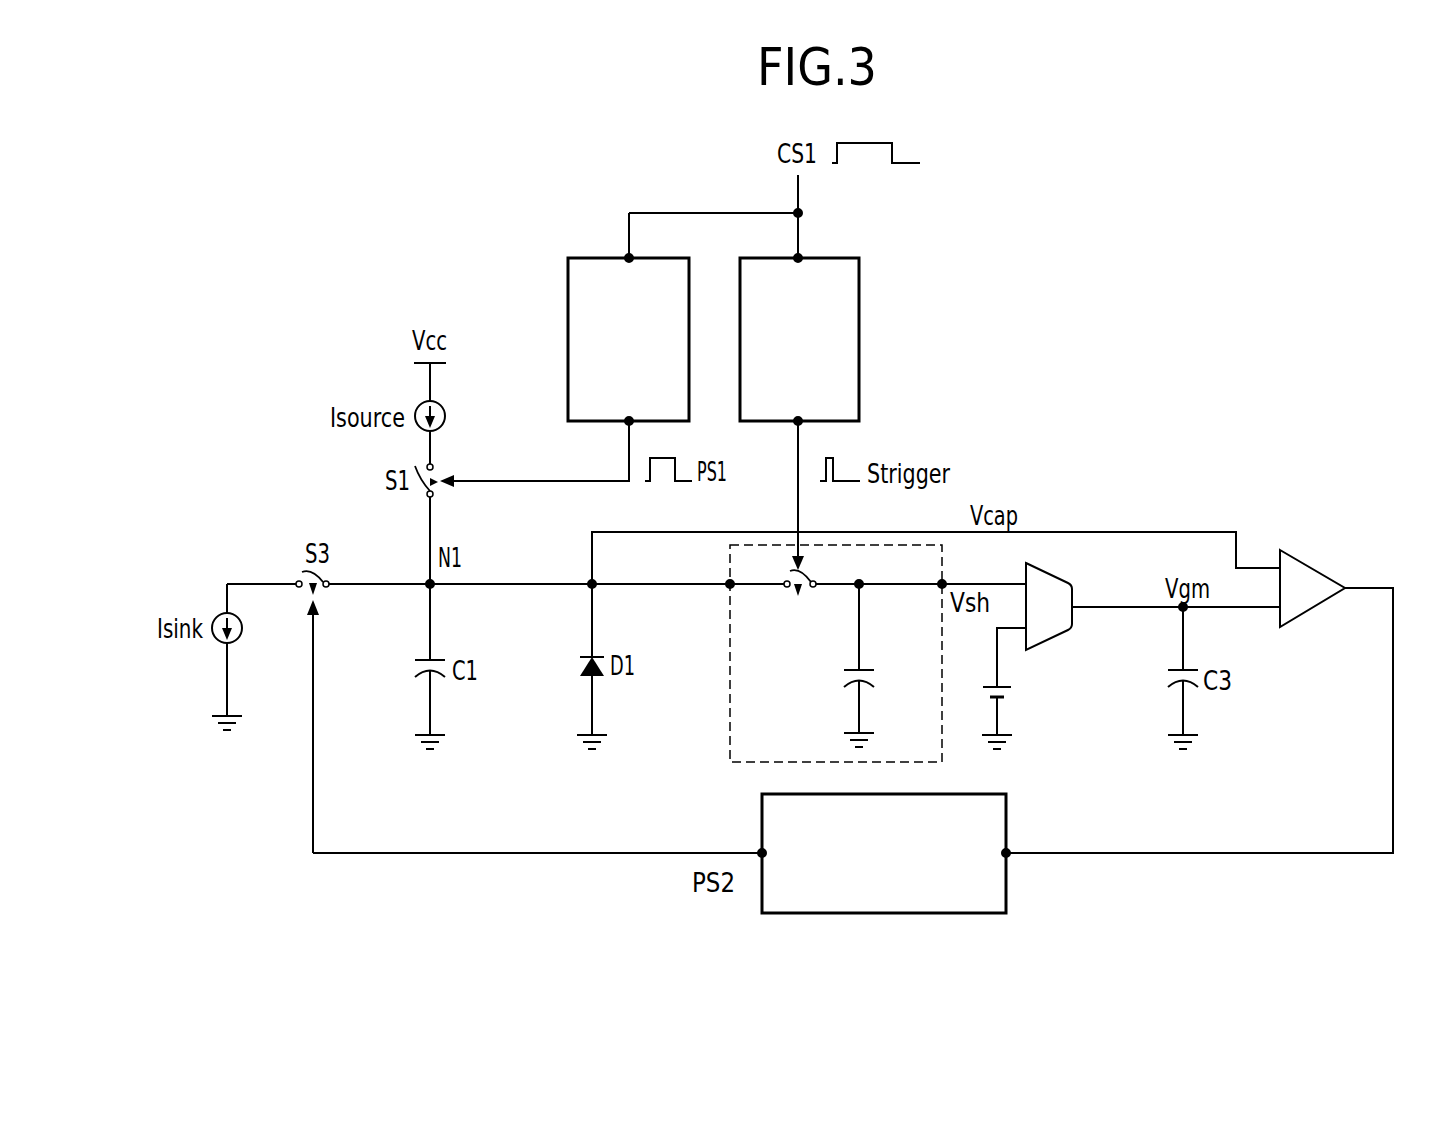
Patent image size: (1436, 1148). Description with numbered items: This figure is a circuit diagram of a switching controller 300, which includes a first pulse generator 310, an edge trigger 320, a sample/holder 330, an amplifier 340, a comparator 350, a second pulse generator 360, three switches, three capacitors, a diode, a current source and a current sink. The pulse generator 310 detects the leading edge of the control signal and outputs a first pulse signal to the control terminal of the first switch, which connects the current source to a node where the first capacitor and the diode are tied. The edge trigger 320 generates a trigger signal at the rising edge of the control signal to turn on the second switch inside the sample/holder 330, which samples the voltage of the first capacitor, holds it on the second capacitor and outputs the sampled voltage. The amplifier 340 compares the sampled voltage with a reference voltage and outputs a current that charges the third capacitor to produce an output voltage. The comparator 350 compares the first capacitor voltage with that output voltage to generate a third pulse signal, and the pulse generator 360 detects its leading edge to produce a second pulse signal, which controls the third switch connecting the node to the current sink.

The switching controller 300 is at (561, 166).
The pulse generator 310 is at (579, 258).
The edge trigger 320 is at (829, 258).
The sample/holder 330 is at (730, 718).
The amplifier 340 is at (1056, 581).
The comparator 350 is at (1315, 560).
The pulse generator 360 is at (1006, 895).